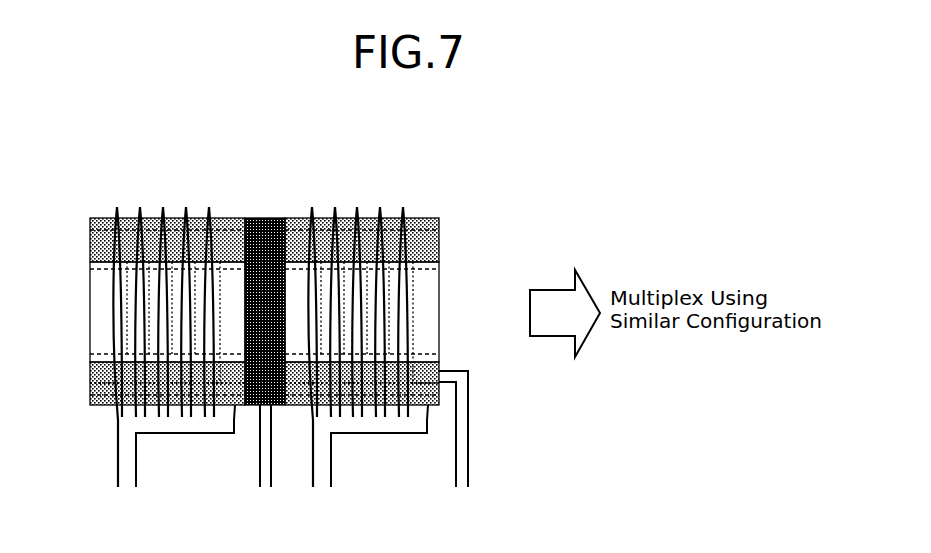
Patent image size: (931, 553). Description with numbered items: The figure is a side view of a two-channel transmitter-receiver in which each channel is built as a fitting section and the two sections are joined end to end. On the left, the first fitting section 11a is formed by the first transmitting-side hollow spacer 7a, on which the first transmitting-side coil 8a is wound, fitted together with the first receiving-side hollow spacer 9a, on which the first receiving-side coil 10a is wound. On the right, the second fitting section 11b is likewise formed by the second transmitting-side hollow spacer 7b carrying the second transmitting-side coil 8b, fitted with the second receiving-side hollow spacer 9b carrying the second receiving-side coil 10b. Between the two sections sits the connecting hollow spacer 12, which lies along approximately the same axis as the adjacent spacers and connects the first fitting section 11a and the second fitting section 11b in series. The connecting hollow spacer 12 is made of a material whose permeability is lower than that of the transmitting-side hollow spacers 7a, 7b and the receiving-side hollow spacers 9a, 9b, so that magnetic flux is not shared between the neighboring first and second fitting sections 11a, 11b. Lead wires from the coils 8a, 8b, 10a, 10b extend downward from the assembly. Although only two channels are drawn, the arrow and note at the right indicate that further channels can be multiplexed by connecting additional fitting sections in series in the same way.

The first transmitting-side hollow spacer 7a is at (92, 222).
The second transmitting-side hollow spacer 7b is at (433, 223).
The first transmitting-side coil 8a is at (117, 437).
The second transmitting-side coil 8b is at (331, 470).
The first receiving-side hollow spacer 9a is at (92, 278).
The second receiving-side hollow spacer 9b is at (433, 279).
The first receiving-side coil 10a is at (260, 474).
The second receiving-side coil 10b is at (468, 425).
The first fitting section 11a is at (242, 193).
The second fitting section 11b is at (440, 193).
The connecting hollow spacer 12 is at (266, 218).